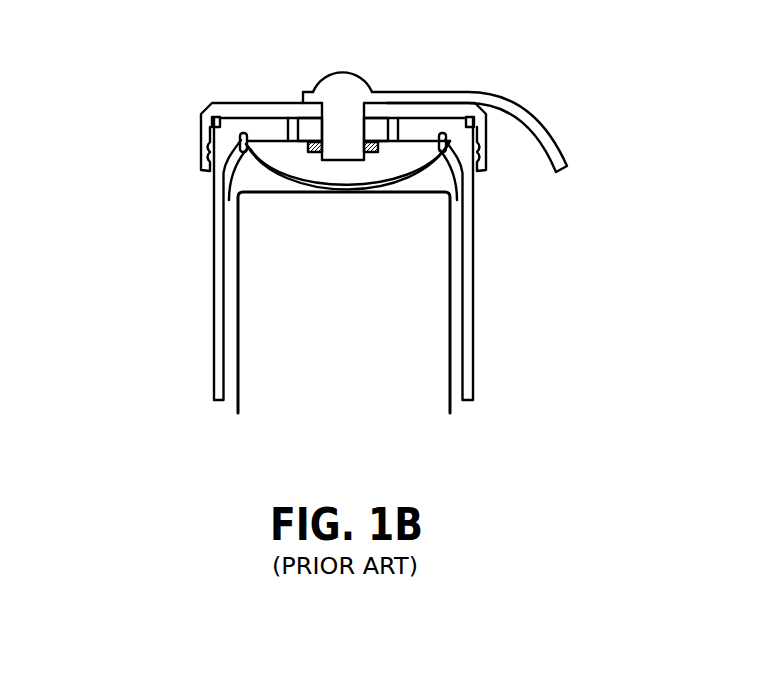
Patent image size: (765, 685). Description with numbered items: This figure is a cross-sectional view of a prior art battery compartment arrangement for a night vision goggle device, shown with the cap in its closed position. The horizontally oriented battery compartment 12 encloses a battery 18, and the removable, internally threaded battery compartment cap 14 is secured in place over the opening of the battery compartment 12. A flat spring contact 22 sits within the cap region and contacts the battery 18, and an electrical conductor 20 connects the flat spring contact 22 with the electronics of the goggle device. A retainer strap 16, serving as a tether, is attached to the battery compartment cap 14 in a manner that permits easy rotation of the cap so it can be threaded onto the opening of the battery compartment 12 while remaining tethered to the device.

The battery compartment 12 is at (213, 285).
The battery compartment cap 14 is at (197, 152).
The retainer strap 16 is at (538, 125).
The battery 18 is at (344, 302).
The electrical conductor 20 is at (264, 117).
The flat spring contact 22 is at (423, 170).